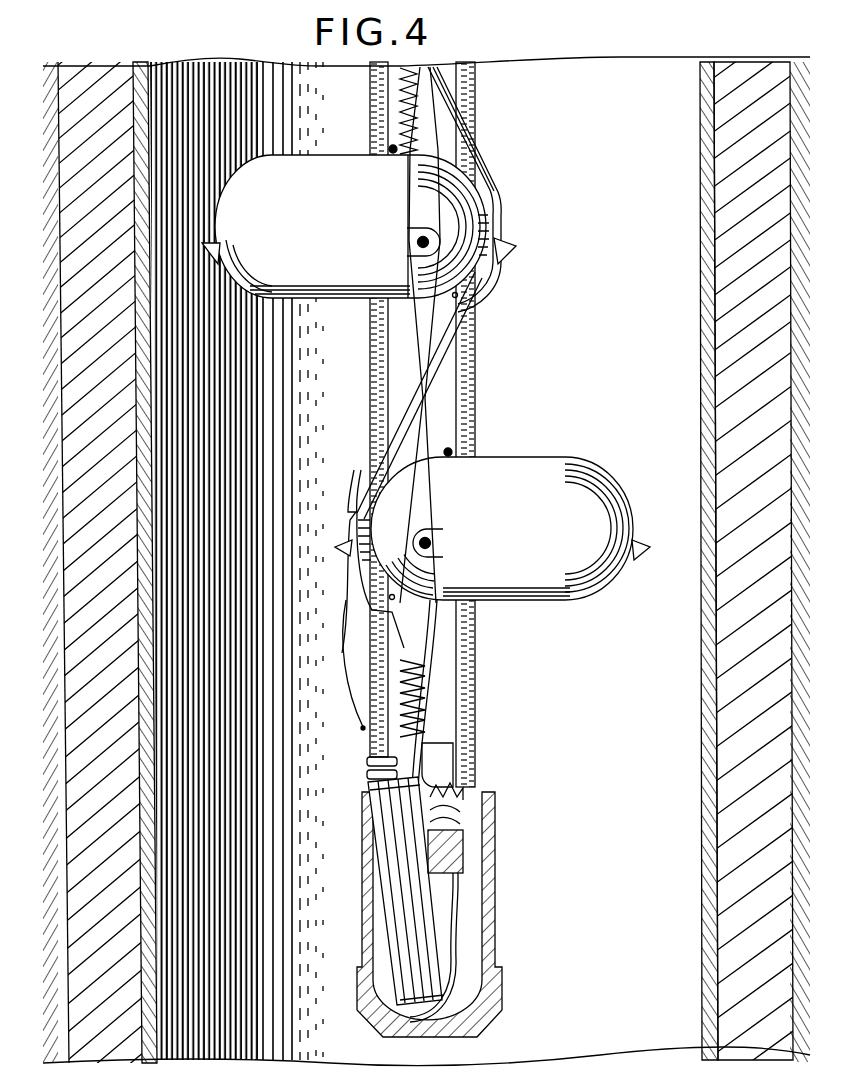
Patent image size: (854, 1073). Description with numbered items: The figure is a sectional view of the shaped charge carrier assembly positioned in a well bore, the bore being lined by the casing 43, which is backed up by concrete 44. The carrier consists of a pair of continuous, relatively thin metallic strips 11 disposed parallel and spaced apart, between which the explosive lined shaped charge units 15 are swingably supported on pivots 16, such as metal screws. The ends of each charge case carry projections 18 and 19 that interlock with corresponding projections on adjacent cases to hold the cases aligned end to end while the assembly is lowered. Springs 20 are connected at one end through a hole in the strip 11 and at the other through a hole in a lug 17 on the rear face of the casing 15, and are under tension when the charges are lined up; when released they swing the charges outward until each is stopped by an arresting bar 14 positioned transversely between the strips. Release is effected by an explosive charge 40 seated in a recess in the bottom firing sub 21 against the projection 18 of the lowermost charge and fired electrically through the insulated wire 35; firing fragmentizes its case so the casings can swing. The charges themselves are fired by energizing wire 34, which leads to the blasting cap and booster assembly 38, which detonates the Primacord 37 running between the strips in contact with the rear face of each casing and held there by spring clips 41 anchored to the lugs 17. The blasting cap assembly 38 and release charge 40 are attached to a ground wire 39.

The carrier strips 11 is at (374, 388).
The arresting bars 14 is at (389, 148).
The shaped charge units 15 is at (352, 194).
The pivots 16 is at (417, 242).
The lug 17 is at (480, 270).
The projection 18 is at (217, 248).
The projection 19 is at (512, 248).
The spring 20 is at (398, 98).
The bottom firing sub 21 is at (495, 886).
The wire 34 is at (430, 398).
The insulated electric wire 35 is at (412, 325).
The Primacord 37 is at (375, 757).
The blasting cap and booster assembly 38 is at (392, 872).
The ground wire 39 is at (458, 932).
The explosive charge 40 is at (465, 850).
The spring clips 41 is at (344, 612).
The casing 43 is at (700, 144).
The concrete 44 is at (735, 222).